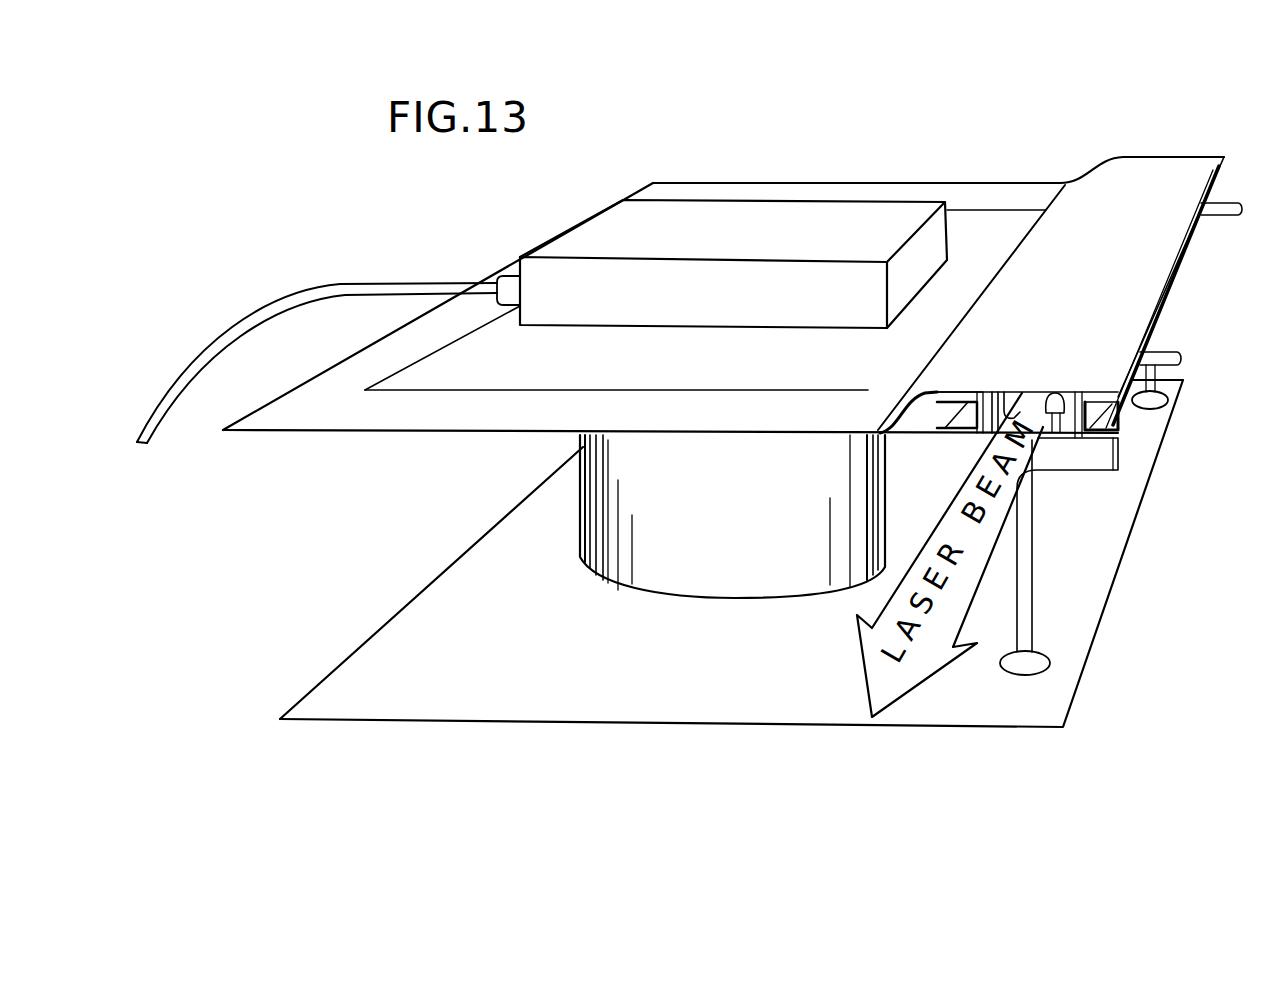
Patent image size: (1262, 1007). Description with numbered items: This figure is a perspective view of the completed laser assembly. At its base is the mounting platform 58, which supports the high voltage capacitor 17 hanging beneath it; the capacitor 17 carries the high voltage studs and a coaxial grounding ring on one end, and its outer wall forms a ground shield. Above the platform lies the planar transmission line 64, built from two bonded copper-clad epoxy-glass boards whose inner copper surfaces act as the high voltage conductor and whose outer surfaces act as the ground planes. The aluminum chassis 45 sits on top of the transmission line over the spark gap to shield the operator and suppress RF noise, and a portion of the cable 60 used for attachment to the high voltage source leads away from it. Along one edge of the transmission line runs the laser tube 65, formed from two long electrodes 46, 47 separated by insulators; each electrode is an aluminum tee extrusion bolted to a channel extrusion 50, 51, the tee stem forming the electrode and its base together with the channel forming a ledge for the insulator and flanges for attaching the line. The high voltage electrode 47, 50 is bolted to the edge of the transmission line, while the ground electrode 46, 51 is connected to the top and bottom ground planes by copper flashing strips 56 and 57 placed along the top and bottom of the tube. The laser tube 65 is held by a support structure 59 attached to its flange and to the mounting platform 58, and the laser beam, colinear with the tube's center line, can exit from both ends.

The capacitor 17 is at (655, 583).
The aluminum chassis 45 is at (600, 215).
The electrode 46 is at (1003, 396).
The electrode 47 is at (1050, 415).
The channel extrusion 50 is at (1127, 412).
The channel extrusion 51 is at (938, 430).
The copper flashing strip 56 is at (1150, 160).
The copper flashing strip 57 is at (905, 440).
The mounting platform 58 is at (597, 713).
The support structure 59 is at (1168, 400).
The cable 60 is at (178, 372).
The transmission line 64 is at (992, 225).
The laser tube 65 is at (1200, 267).